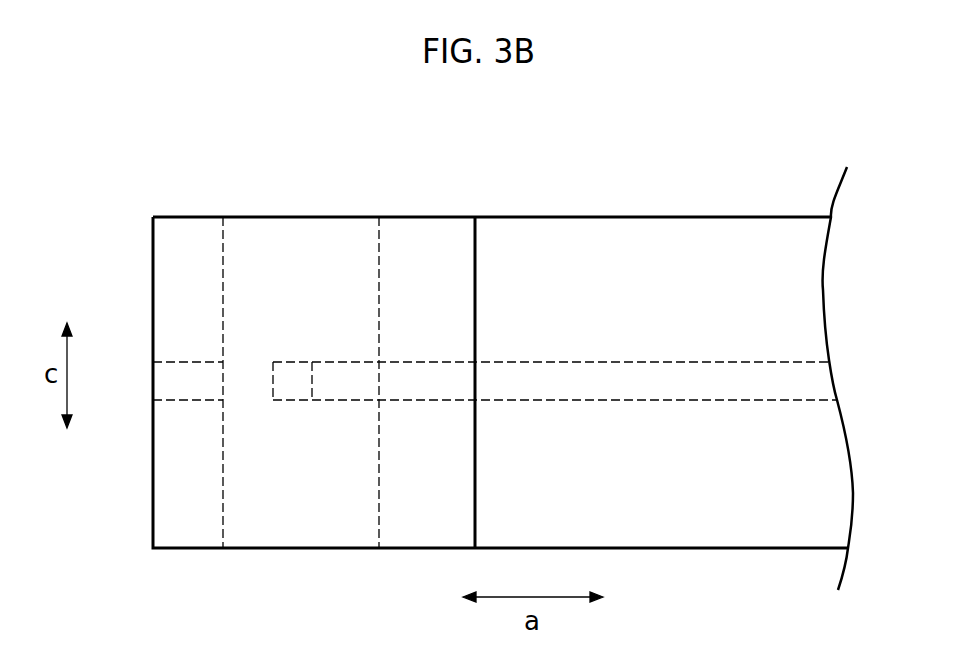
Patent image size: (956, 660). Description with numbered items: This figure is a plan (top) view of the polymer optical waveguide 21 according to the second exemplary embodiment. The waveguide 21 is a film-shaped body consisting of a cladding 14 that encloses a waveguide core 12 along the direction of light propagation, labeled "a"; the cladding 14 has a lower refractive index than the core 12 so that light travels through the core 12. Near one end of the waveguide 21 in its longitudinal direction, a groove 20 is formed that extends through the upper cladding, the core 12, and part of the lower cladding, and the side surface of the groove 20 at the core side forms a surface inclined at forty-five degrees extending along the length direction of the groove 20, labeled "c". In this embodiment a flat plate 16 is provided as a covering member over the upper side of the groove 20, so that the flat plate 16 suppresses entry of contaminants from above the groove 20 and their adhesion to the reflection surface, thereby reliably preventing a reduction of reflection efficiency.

The waveguide core 12 is at (587, 378).
The cladding 14 is at (750, 247).
The flat plate 16 is at (428, 247).
The groove 20 is at (298, 263).
The polymer optical waveguide 21 is at (683, 208).